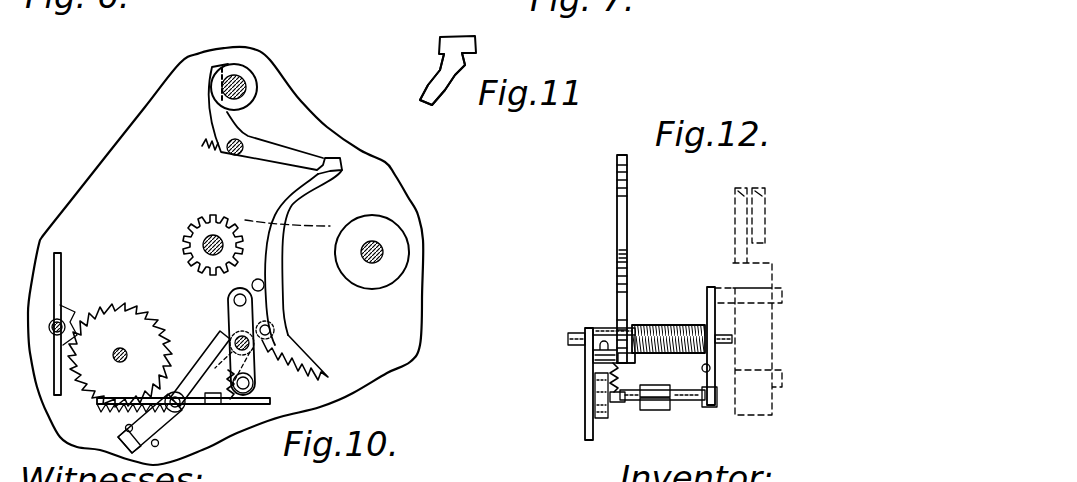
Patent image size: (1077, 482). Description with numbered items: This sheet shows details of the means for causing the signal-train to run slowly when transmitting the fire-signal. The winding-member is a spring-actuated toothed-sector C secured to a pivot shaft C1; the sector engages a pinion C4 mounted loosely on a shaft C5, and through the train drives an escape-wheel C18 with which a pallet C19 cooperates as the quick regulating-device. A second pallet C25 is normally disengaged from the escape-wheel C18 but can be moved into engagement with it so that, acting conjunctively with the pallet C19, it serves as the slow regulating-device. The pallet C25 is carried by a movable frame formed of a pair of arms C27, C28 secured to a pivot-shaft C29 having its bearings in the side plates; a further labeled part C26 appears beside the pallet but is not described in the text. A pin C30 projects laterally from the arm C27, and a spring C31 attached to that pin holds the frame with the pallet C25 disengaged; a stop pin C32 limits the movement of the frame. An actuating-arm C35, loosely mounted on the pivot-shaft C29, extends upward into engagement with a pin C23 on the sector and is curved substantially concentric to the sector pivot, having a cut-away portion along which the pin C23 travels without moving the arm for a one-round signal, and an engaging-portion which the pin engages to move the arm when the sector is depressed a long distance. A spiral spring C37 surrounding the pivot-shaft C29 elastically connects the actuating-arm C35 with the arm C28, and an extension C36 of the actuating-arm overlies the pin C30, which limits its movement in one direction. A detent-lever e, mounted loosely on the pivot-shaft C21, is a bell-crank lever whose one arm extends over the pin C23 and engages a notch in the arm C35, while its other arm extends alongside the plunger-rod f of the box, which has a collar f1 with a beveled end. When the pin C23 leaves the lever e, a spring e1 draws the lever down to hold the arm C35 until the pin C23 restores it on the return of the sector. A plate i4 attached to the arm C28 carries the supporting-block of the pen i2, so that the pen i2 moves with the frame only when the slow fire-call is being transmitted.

In FIG. 10, the plunger-rod f is at (248, 84).
In FIG. 10, the collar f1 is at (250, 78).
In FIG. 10, the detent-lever e is at (294, 158).
In FIG. 11, the detent-lever e is at (455, 36).
In FIG. 10, the spring e1 is at (203, 147).
In FIG. 10, the pivot-shaft C21 is at (233, 156).
In FIG. 10, the pinion C4 is at (188, 238).
In FIG. 10, the shaft C5 is at (219, 238).
In FIG. 10, the toothed-sector C is at (329, 228).
In FIG. 10, the pivot shaft C1 is at (383, 252).
In FIG. 10, the actuating-arm C35 is at (283, 298).
In FIG. 11, the actuating-arm C35 is at (432, 80).
In FIG. 12, the actuating-arm C35 is at (617, 258).
In FIG. 10, the pin C30 is at (262, 378).
In FIG. 12, the pin C30 is at (600, 360).
In FIG. 10, the pin C23 is at (264, 285).
In FIG. 10, the spiral spring C37 is at (274, 332).
In FIG. 12, the spiral spring C37 is at (650, 325).
In FIG. 10, the plate i4 is at (233, 300).
In FIG. 12, the plate i4 is at (707, 300).
In FIG. 12, the pen i2 is at (737, 243).
In FIG. 10, the extension C36 is at (224, 344).
In FIG. 12, the extension C36 is at (614, 338).
In FIG. 10, the pivot-shaft C29 is at (257, 350).
In FIG. 12, the pivot-shaft C29 is at (568, 340).
In FIG. 10, the arm C28 is at (213, 362).
In FIG. 12, the arm C28 is at (715, 368).
In FIG. 10, the arm C27 is at (150, 418).
In FIG. 12, the arm C27 is at (590, 440).
In FIG. 10, the stop pin C32 is at (125, 429).
In FIG. 10, the second pallet C25 is at (207, 410).
In FIG. 12, the second pallet C25 is at (597, 408).
In FIG. 10, the block C26 is at (218, 407).
In FIG. 12, the block C26 is at (620, 405).
In FIG. 10, the spring C31 is at (232, 405).
In FIG. 12, the spring C31 is at (619, 380).
In FIG. 10, the escape-wheel C18 is at (152, 320).
In FIG. 10, the pallet C19 is at (66, 315).